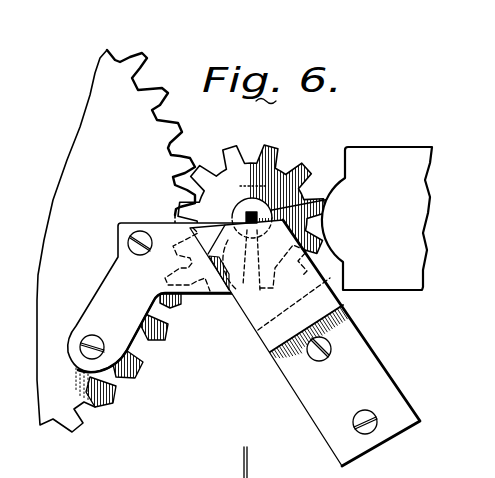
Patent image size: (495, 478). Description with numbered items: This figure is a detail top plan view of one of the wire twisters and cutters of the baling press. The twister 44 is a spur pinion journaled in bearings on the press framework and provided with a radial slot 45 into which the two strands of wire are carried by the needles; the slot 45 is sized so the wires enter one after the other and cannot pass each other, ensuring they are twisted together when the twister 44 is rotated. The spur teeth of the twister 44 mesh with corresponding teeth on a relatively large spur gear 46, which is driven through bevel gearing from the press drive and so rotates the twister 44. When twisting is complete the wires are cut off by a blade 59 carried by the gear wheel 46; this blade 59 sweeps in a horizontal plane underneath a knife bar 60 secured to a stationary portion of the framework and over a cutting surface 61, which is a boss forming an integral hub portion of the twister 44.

The twister 44 is at (278, 170).
The radial slot 45 is at (208, 294).
The spur gear 46 is at (115, 403).
The blade 59 is at (193, 294).
The knife bar 60 is at (369, 340).
The cutting surface 61 is at (235, 158).